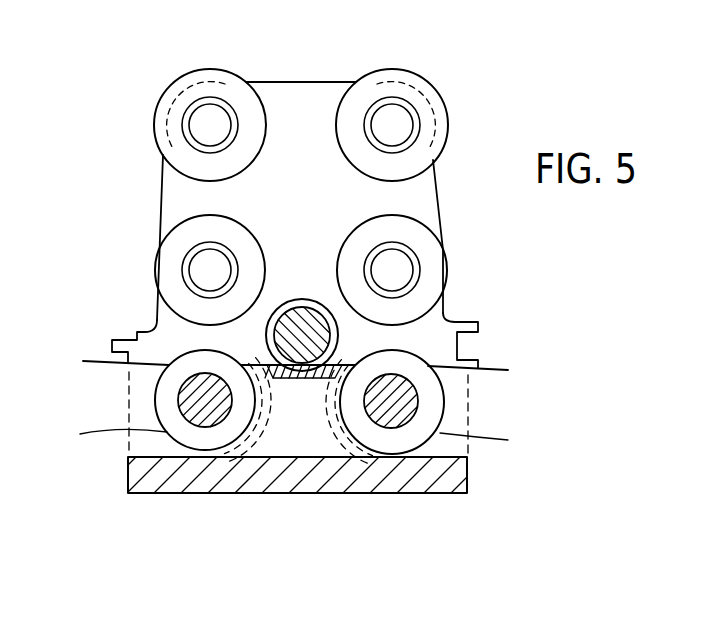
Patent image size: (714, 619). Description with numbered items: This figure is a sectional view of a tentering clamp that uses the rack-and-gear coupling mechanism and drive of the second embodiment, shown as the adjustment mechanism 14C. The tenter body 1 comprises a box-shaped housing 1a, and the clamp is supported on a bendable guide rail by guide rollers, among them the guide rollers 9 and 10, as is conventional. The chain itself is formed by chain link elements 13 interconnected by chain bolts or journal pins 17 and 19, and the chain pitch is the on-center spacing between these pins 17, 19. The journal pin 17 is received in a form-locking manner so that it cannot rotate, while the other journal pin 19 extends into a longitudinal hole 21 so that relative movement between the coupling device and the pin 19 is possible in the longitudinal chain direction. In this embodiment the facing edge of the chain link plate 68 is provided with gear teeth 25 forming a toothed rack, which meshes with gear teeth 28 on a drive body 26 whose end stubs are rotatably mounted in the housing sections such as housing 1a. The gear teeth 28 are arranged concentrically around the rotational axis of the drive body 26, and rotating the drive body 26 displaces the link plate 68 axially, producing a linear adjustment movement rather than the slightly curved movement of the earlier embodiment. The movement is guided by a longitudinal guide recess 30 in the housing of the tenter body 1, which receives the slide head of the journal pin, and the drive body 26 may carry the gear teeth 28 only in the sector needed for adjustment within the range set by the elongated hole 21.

The tenter body 1 is at (268, 88).
The box-shaped housing 1a is at (467, 494).
The guide roller 9 is at (177, 85).
The guide roller 10 is at (168, 253).
The chain link element 13 is at (107, 415).
The adjustment mechanism 14C is at (265, 443).
The chain bolt or journal pin 17 is at (397, 412).
The chain bolt or journal pin 19 is at (195, 422).
The longitudinal hole 21 is at (242, 417).
The gear teeth 25 is at (273, 378).
The drive body 26 is at (283, 282).
The gear teeth 28 is at (312, 313).
The longitudinal guide recess 30 is at (362, 442).
The chain link plate 68 is at (313, 443).